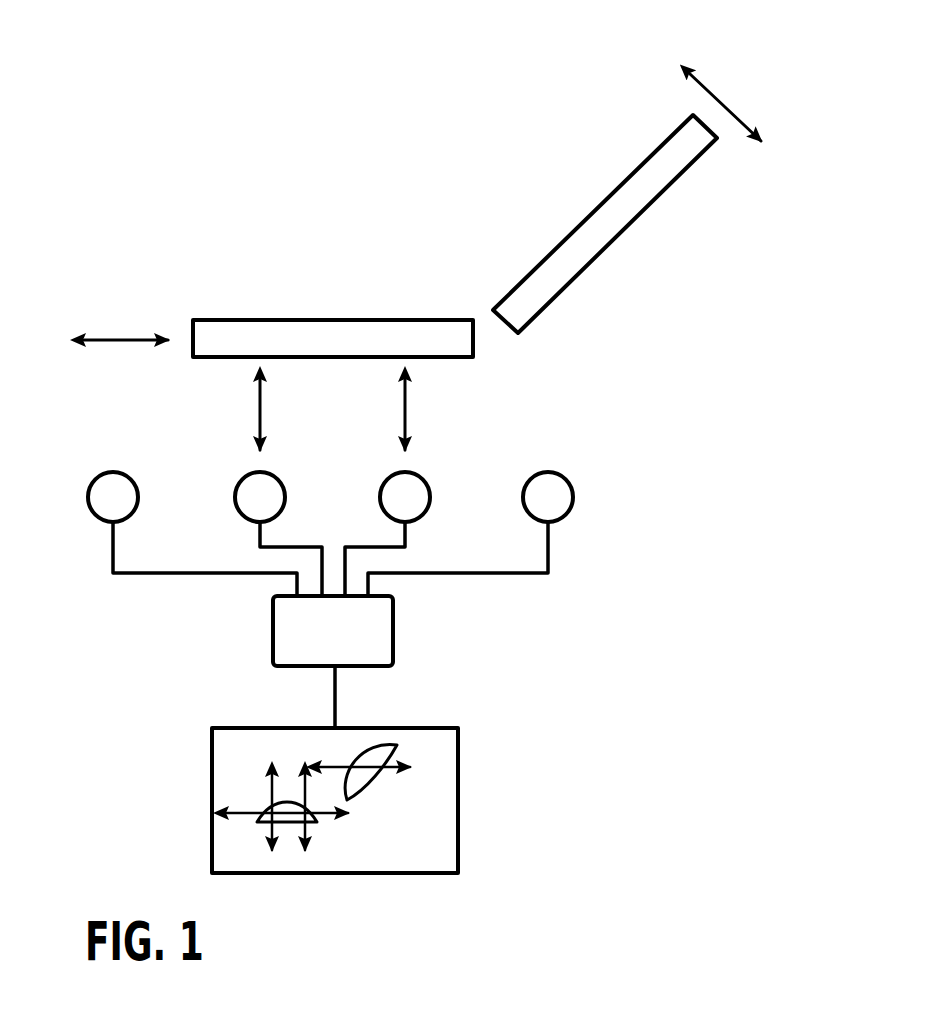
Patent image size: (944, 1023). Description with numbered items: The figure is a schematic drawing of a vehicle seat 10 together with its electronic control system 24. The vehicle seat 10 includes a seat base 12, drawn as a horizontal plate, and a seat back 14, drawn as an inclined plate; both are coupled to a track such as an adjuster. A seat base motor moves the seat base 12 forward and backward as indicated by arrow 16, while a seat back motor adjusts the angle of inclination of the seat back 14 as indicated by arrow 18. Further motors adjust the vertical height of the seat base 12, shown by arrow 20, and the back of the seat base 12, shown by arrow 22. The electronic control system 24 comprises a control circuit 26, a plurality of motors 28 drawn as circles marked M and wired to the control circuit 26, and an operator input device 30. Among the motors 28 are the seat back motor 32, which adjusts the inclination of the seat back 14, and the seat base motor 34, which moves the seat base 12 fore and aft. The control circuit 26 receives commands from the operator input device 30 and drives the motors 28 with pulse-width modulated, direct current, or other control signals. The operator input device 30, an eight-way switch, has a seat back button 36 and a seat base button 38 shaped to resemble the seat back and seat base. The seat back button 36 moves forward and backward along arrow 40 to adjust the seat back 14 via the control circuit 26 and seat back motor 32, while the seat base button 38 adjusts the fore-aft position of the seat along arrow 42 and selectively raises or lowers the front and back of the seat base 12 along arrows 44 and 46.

The vehicle seat 10 is at (401, 82).
The seat base 12 is at (323, 328).
The seat back 14 is at (605, 233).
The arrow 16 is at (127, 340).
The arrow 18 is at (728, 101).
The arrow 20 is at (257, 418).
The arrow 22 is at (407, 415).
The electronic control system 24 is at (586, 620).
The control circuit 26 is at (393, 628).
The motors 28 is at (622, 495).
The operator input device 30 is at (458, 798).
The seat back motor 32 is at (563, 472).
The seat base motor 34 is at (95, 480).
The seat back button 36 is at (362, 790).
The seat base button 38 is at (293, 822).
The arrow 40 is at (385, 770).
The arrow 42 is at (252, 812).
The arrow 44 is at (267, 807).
The arrow 46 is at (295, 807).